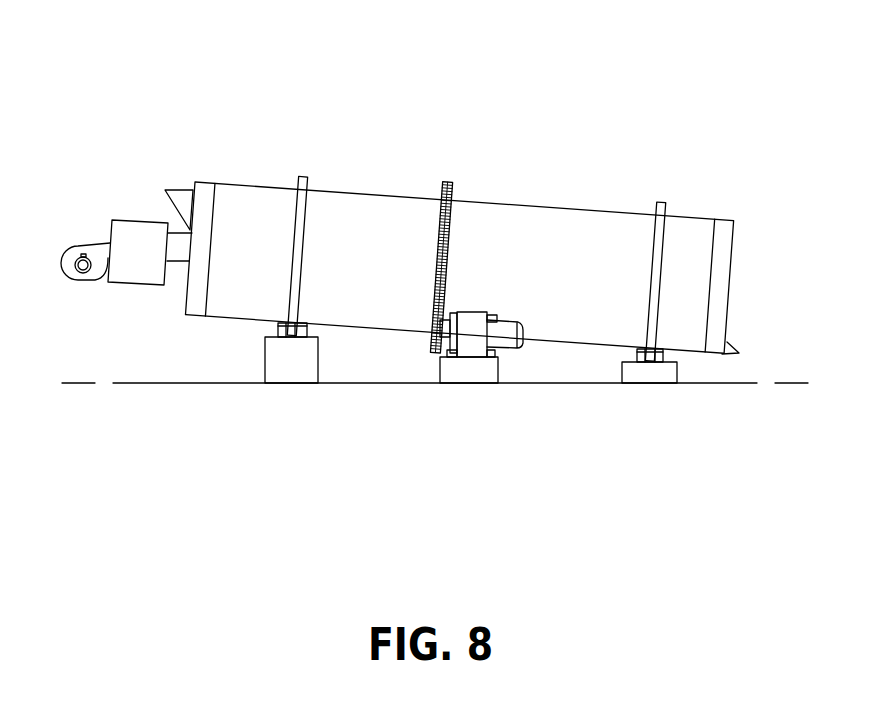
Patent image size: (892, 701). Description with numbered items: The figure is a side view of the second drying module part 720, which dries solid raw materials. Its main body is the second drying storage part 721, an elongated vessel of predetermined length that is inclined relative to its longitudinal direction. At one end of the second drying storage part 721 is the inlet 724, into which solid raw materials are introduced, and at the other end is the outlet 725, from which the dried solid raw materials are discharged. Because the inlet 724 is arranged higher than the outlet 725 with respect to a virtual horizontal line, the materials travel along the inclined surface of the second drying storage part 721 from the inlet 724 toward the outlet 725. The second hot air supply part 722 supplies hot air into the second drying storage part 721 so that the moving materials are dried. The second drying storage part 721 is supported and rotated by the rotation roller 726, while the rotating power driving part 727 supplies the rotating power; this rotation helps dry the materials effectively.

The second drying module part 720 is at (327, 97).
The second drying storage part 721 is at (540, 223).
The second hot air supply part 722 is at (125, 228).
The inlet 724 is at (178, 190).
The outlet 725 is at (733, 347).
The rotation roller 726 is at (295, 337).
The rotating power driving part 727 is at (507, 335).